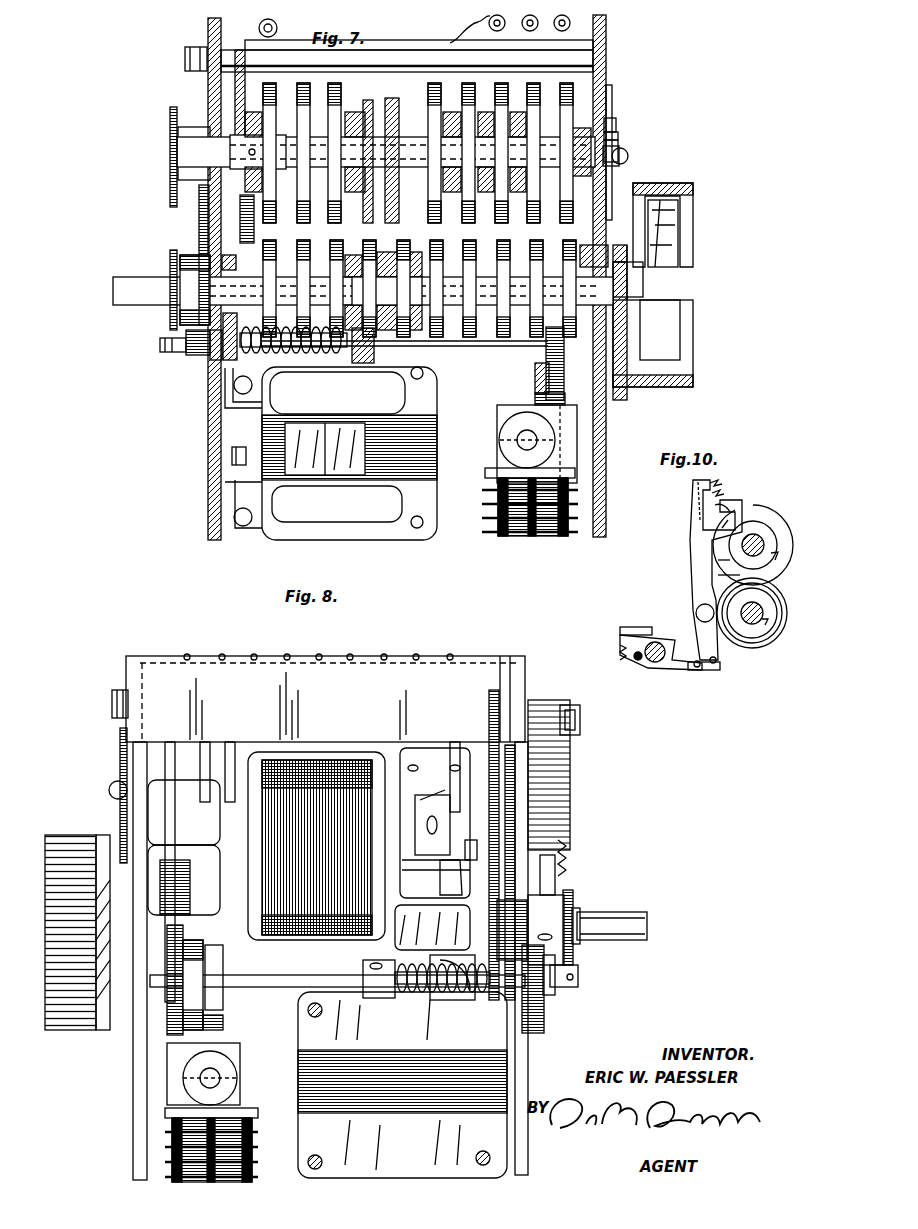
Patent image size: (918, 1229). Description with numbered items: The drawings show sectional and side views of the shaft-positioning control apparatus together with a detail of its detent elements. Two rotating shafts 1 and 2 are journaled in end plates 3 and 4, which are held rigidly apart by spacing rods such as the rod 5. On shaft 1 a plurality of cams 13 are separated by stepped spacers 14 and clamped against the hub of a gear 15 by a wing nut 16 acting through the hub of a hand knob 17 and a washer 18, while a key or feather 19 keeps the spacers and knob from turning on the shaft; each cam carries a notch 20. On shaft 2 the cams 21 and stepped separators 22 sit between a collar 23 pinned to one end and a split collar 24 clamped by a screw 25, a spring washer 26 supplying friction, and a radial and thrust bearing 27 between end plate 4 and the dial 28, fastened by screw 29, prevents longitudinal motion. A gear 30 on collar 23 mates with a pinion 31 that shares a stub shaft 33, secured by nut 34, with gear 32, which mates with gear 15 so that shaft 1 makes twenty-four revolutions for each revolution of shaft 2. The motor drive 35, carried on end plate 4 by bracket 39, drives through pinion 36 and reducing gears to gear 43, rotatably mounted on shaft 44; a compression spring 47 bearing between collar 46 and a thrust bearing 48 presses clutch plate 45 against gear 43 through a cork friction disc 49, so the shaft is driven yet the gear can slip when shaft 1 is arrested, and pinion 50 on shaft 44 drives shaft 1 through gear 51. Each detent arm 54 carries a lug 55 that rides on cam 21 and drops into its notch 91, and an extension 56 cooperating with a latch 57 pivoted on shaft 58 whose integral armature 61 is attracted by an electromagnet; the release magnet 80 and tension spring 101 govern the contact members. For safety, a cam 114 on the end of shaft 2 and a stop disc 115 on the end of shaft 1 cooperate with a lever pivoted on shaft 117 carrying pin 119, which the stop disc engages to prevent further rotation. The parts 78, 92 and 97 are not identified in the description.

In FIG. 7, the shaft 1 is at (123, 292).
In FIG. 10, the shaft 1 is at (750, 626).
In FIG. 8, the shaft 1 is at (622, 917).
In FIG. 7, the shaft 2 is at (222, 150).
In FIG. 10, the shaft 2 is at (758, 540).
In FIG. 7, the end plate 3 is at (208, 440).
In FIG. 8, the end plate 3 is at (522, 1085).
In FIG. 7, the end plate 4 is at (607, 441).
In FIG. 8, the end plate 4 is at (140, 1098).
In FIG. 7, the spacing rod 5 is at (528, 60).
In FIG. 7, the cam 13 is at (435, 248).
In FIG. 10, the cam 13 is at (763, 642).
In FIG. 7, the stepped spacer 14 is at (300, 258).
In FIG. 7, the gear 15 is at (207, 291).
In FIG. 7, the wing nut 16 is at (684, 255).
In FIG. 7, the hand knob 17 is at (680, 183).
In FIG. 8, the hand knob 17 is at (45, 895).
In FIG. 7, the washer 18 is at (580, 247).
In FIG. 7, the key or feather 19 is at (388, 278).
In FIG. 7, the notch 20 is at (368, 250).
In FIG. 10, the notch 20 is at (770, 600).
In FIG. 7, the cam 21 is at (435, 86).
In FIG. 10, the cam 21 is at (724, 577).
In FIG. 7, the stepped separator 22 is at (386, 185).
In FIG. 7, the collar 23 is at (248, 225).
In FIG. 7, the split collar 24 is at (577, 130).
In FIG. 7, the screw 25 is at (583, 128).
In FIG. 7, the spring washer 26 is at (619, 120).
In FIG. 7, the radial and thrust bearing 27 is at (614, 126).
In FIG. 7, the dial 28 is at (611, 100).
In FIG. 8, the dial 28 is at (120, 738).
In FIG. 7, the screw 29 is at (628, 156).
In FIG. 8, the screw 29 is at (109, 789).
In FIG. 7, the gear 30 is at (233, 84).
In FIG. 8, the gear 30 is at (492, 738).
In FIG. 8, the pinion 31 is at (463, 878).
In FIG. 7, the gear 32 is at (199, 240).
In FIG. 8, the gear 32 is at (516, 758).
In FIG. 8, the stub shaft 33 is at (480, 841).
In FIG. 8, the nut 34 is at (558, 862).
In FIG. 8, the motor drive 35 is at (331, 768).
In FIG. 8, the pinion 36 is at (178, 860).
In FIG. 8, the bracket 39 is at (190, 809).
In FIG. 7, the gear 43 is at (564, 385).
In FIG. 8, the gear 43 is at (177, 1022).
In FIG. 7, the shaft 44 is at (458, 348).
In FIG. 8, the shaft 44 is at (262, 988).
In FIG. 7, the clutch plate 45 is at (535, 370).
In FIG. 8, the clutch plate 45 is at (204, 1011).
In FIG. 7, the collar 46 is at (360, 352).
In FIG. 8, the collar 46 is at (378, 988).
In FIG. 7, the compression spring 47 is at (290, 355).
In FIG. 8, the compression spring 47 is at (470, 990).
In FIG. 7, the thrust bearing 48 is at (243, 333).
In FIG. 8, the thrust bearing 48 is at (512, 988).
In FIG. 7, the friction disc 49 is at (535, 397).
In FIG. 8, the friction disc 49 is at (205, 1028).
In FIG. 7, the pinion 50 is at (185, 345).
In FIG. 8, the pinion 50 is at (540, 995).
In FIG. 7, the gear 51 is at (208, 372).
In FIG. 8, the gear 51 is at (533, 903).
In FIG. 10, the detent arm 54 is at (692, 572).
In FIG. 10, the lug 55 is at (718, 518).
In FIG. 10, the extension 56 is at (714, 665).
In FIG. 10, the latch 57 is at (697, 668).
In FIG. 10, the shaft 58 is at (658, 662).
In FIG. 10, the armature 61 is at (640, 628).
In FIG. 7, the contact 78 is at (232, 456).
In FIG. 7, the release magnet 80 is at (402, 497).
In FIG. 10, the notch 91 is at (748, 540).
In FIG. 10, the stop 92 is at (735, 508).
In FIG. 10, the projection 97 is at (719, 563).
In FIG. 7, the tension spring 101 is at (232, 482).
In FIG. 7, the cam 114 is at (170, 111).
In FIG. 8, the cam 114 is at (572, 800).
In FIG. 7, the stop disc 115 is at (170, 262).
In FIG. 8, the stop disc 115 is at (575, 895).
In FIG. 8, the shaft 117 is at (580, 712).
In FIG. 8, the pin 119 is at (582, 920).